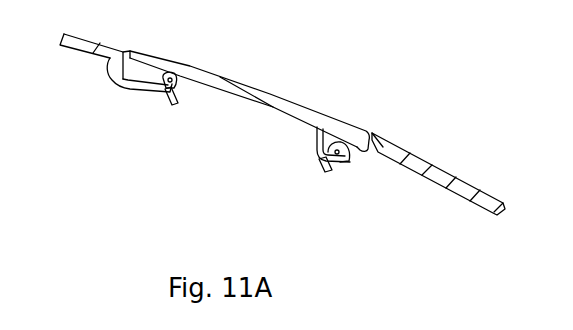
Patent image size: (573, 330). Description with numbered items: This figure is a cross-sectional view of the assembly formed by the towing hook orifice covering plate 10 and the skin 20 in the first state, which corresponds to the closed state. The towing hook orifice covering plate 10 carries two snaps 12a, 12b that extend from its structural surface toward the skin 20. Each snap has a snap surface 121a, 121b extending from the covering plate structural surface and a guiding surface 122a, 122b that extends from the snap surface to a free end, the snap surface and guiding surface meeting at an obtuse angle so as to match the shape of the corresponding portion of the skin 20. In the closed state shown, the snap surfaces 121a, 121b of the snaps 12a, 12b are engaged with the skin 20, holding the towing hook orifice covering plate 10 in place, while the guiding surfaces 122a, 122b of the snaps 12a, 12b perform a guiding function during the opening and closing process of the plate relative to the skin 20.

The towing hook orifice covering plate 10 is at (240, 80).
The snap 12a is at (176, 90).
The snap surface 121a is at (160, 88).
The guiding surface 122a is at (167, 100).
The snap 12b is at (318, 142).
The snap surface 121b is at (333, 156).
The guiding surface 122b is at (325, 168).
The skin 20 is at (422, 152).